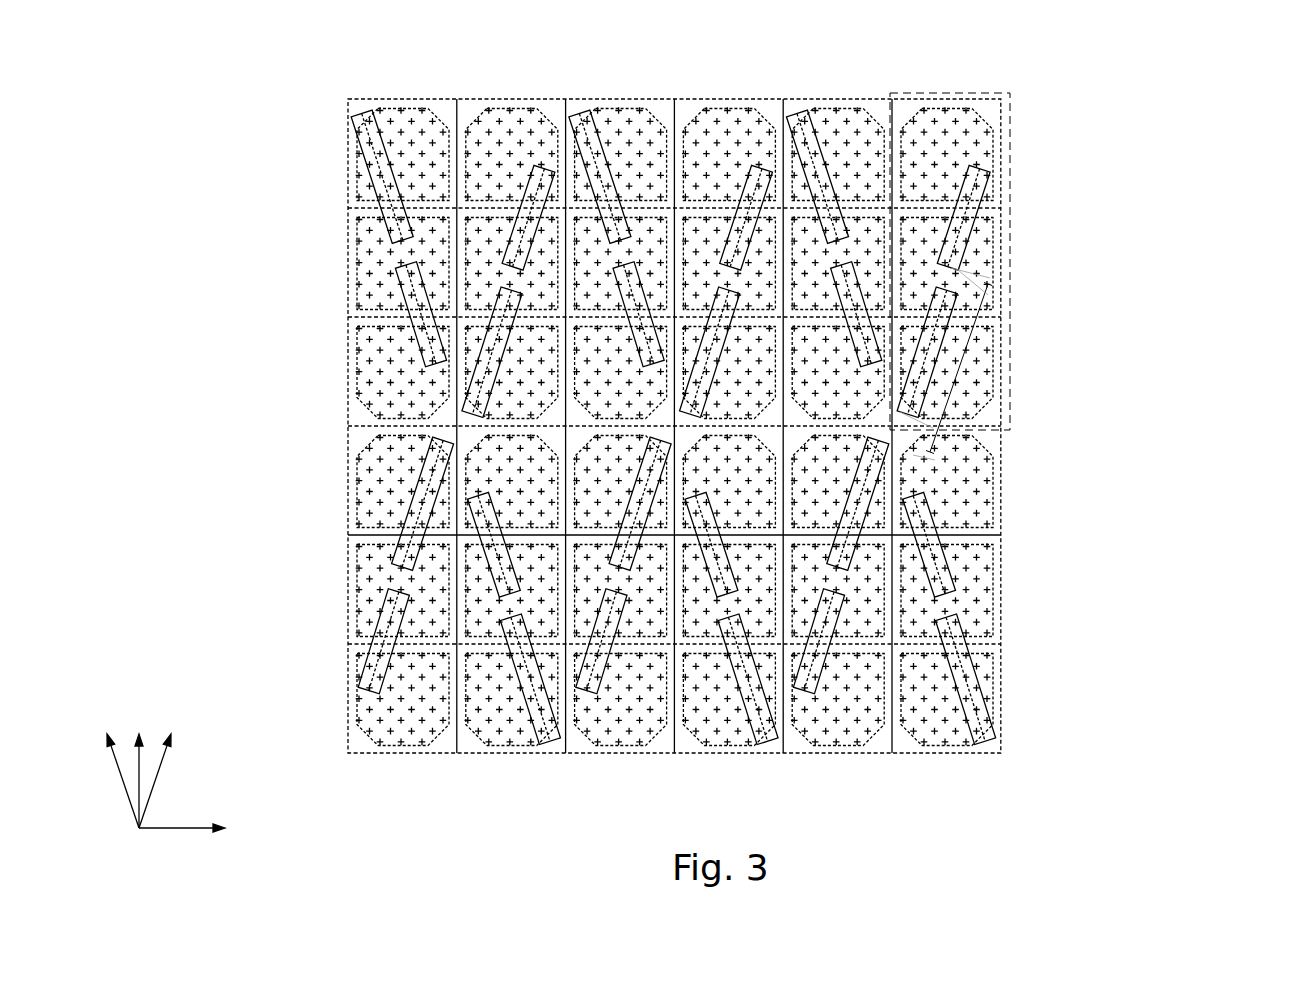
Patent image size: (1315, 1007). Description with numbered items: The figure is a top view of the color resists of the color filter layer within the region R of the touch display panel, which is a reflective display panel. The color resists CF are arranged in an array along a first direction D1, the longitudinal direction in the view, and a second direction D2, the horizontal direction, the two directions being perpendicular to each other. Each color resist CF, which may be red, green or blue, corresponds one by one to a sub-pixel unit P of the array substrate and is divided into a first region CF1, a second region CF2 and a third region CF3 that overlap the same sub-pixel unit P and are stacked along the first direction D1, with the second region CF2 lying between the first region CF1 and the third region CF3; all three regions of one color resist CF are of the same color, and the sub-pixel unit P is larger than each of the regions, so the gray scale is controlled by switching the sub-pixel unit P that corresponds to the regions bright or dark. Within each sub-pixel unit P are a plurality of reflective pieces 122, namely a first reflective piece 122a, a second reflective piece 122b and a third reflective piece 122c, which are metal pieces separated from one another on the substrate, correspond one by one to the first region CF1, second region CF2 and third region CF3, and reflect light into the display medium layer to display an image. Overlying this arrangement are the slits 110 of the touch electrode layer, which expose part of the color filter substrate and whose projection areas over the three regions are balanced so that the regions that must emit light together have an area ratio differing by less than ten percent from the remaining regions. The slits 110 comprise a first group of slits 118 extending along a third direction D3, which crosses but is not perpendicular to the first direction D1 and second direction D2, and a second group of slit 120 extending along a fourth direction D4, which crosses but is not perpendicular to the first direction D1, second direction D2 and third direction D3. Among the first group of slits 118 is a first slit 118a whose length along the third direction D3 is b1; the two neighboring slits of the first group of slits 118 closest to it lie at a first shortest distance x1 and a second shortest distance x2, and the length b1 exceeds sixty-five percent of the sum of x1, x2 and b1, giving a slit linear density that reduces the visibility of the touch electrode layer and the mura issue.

The region R is at (238, 67).
The sub-pixel unit P is at (940, 92).
The slits 110 is at (1243, 22).
The first group of slits 118 is at (967, 247).
The first slit 118a is at (937, 372).
The second group of slit 120 is at (860, 272).
The reflective pieces 122 is at (1243, 128).
The first reflective piece 122a is at (985, 137).
The second reflective piece 122b is at (983, 223).
The third reflective piece 122c is at (985, 343).
The color resist CF is at (1245, 272).
The first region CF1 is at (991, 119).
The second region CF2 is at (997, 275).
The third region CF3 is at (992, 413).
The first shortest distance x1 is at (985, 288).
The second shortest distance x2 is at (930, 452).
The length b1 is at (958, 370).
The first direction D1 is at (142, 764).
The second direction D2 is at (204, 830).
The third direction D3 is at (169, 768).
The fourth direction D4 is at (108, 766).